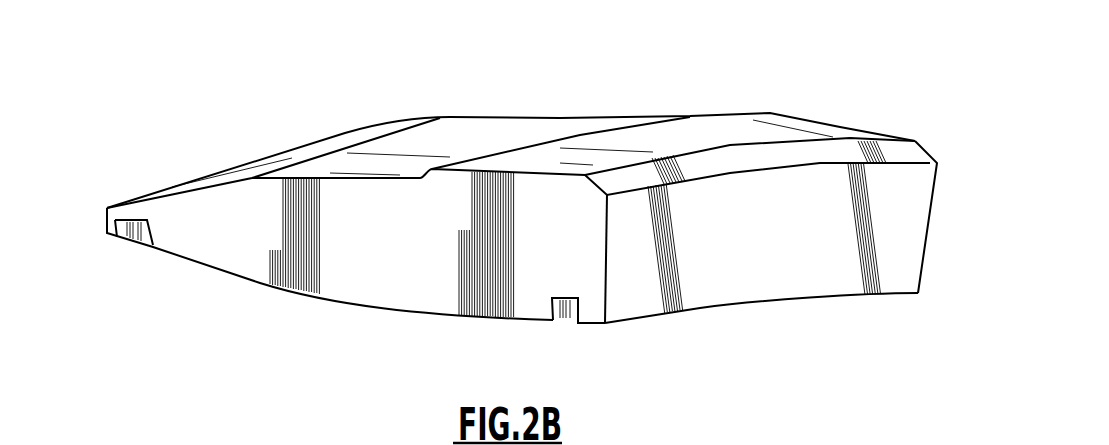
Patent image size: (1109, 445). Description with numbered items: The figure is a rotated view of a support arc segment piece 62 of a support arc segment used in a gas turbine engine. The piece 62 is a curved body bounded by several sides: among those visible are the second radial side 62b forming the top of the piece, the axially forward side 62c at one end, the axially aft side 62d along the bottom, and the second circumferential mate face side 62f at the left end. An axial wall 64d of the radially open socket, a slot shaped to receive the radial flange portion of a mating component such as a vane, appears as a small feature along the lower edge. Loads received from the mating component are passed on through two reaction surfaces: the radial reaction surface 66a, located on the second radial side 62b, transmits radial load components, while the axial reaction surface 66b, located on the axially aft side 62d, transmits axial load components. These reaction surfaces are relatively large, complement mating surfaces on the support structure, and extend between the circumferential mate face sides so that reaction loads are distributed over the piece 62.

The support arc segment piece 62 is at (257, 283).
The second radial side 62b is at (503, 135).
The axially forward side 62c is at (105, 210).
The axially aft side 62d is at (630, 317).
The second circumferential mate face side 62f is at (217, 240).
The axial wall 64d is at (592, 310).
The radial reaction surface 66a is at (690, 115).
The axial reaction surface 66b is at (930, 207).